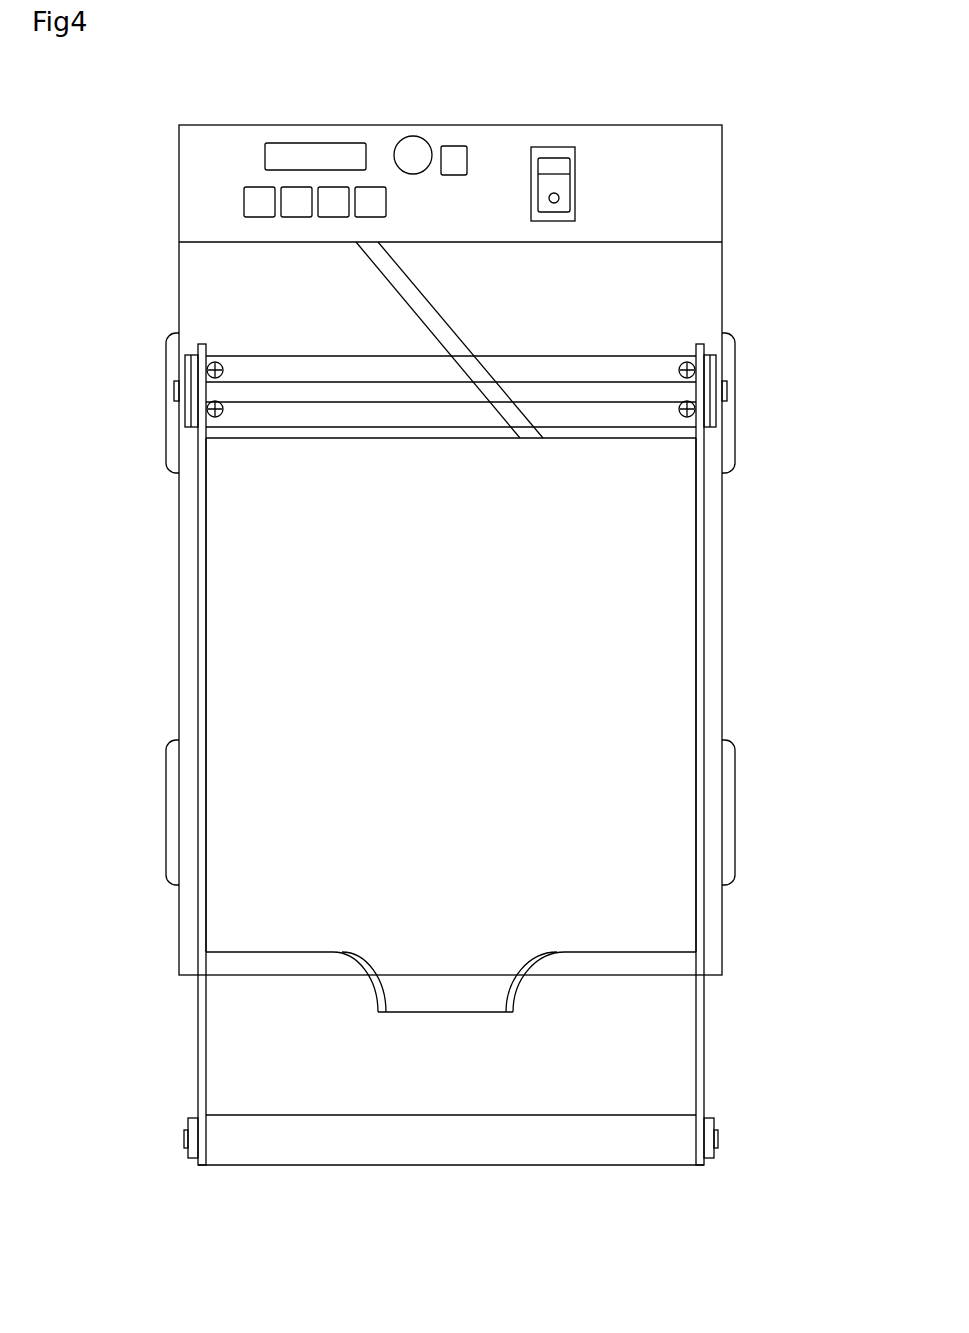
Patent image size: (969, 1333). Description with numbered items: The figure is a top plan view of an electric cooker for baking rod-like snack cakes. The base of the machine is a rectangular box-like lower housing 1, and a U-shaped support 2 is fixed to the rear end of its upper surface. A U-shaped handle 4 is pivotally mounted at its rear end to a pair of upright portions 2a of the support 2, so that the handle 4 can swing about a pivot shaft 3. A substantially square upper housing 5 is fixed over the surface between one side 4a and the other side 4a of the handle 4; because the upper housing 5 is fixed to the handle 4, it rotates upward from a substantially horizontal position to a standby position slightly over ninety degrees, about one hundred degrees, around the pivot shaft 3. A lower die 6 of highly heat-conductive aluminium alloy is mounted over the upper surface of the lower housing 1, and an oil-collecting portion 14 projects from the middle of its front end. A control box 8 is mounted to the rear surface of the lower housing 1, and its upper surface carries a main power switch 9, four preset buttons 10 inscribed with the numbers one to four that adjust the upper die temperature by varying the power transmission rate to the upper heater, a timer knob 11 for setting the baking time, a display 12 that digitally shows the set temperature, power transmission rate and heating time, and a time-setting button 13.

The lower housing 1 is at (722, 660).
The support 2 is at (637, 354).
The upright portions 2a is at (192, 361).
The pivot shaft 3 is at (637, 401).
The handle 4 is at (455, 791).
The sides of the handle 4a is at (198, 1053).
The upper housing 5 is at (658, 585).
The lower die 6 is at (545, 966).
The control box 8 is at (695, 186).
The main power switch 9 is at (554, 158).
The preset buttons 10 is at (257, 187).
The timer knob 11 is at (413, 137).
The display 12 is at (316, 143).
The time-setting button 13 is at (456, 146).
The oil-collecting portion 14 is at (451, 988).